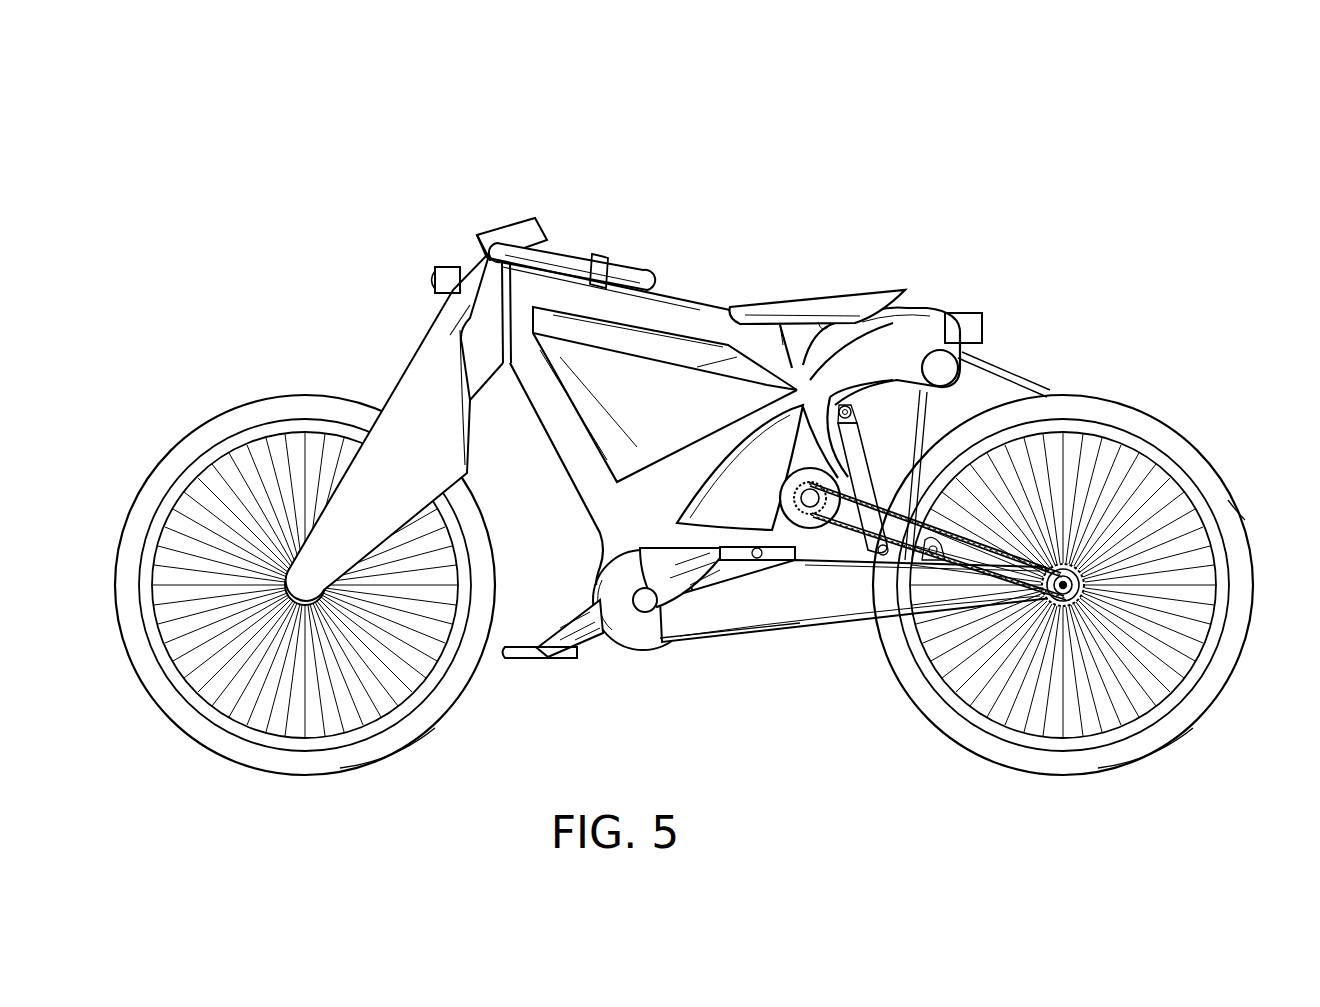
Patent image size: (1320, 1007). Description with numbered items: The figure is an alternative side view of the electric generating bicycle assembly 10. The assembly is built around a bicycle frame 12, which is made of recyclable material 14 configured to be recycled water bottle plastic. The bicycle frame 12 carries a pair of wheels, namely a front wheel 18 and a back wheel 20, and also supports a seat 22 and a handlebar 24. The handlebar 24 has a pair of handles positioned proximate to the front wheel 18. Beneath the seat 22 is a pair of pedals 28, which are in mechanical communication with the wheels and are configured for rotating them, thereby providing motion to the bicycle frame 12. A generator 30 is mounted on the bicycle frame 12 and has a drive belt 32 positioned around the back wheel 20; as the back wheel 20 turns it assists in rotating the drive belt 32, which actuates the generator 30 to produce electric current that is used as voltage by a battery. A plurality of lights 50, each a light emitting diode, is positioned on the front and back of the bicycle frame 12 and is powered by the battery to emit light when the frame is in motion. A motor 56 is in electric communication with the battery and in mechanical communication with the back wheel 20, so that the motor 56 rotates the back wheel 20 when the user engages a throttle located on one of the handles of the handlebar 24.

The electric generating bicycle assembly 10 is at (1085, 160).
The bicycle frame 12 is at (652, 315).
The recyclable material 14 is at (712, 320).
The front wheel 18 is at (148, 560).
The back wheel 20 is at (1225, 548).
The seat 22 is at (850, 305).
The handlebar 24 is at (550, 262).
The pair of pedals 28 is at (652, 600).
The generator 30 is at (945, 368).
The drive belt 32 is at (1023, 392).
The lights 50 is at (432, 278).
The motor 56 is at (808, 525).